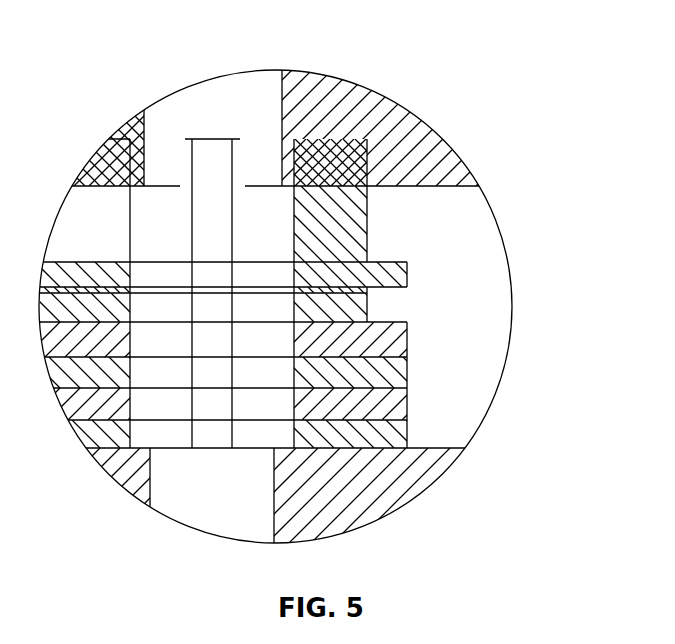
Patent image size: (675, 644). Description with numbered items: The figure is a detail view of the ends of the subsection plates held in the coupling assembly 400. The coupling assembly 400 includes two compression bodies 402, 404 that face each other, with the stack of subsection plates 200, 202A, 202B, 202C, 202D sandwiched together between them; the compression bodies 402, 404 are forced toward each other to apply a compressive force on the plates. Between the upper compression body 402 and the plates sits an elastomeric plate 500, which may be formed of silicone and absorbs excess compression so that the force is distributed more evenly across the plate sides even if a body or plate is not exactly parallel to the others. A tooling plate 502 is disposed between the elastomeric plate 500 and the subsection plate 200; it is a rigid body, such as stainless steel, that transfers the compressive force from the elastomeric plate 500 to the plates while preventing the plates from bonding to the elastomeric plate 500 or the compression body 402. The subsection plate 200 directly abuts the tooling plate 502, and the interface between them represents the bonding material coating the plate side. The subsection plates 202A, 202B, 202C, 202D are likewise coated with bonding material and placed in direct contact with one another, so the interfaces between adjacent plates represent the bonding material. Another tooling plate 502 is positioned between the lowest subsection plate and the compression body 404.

The coupling assembly 400 is at (341, 72).
The compression body 402 is at (387, 108).
The compression body 404 is at (377, 502).
The elastomeric plate 500 is at (332, 213).
The tooling plate 502 is at (380, 273).
The subsection plate 200 is at (357, 293).
The subsection plate 202A is at (350, 307).
The subsection plate 202B is at (407, 338).
The subsection plate 202C is at (377, 375).
The subsection plate 202D is at (358, 405).